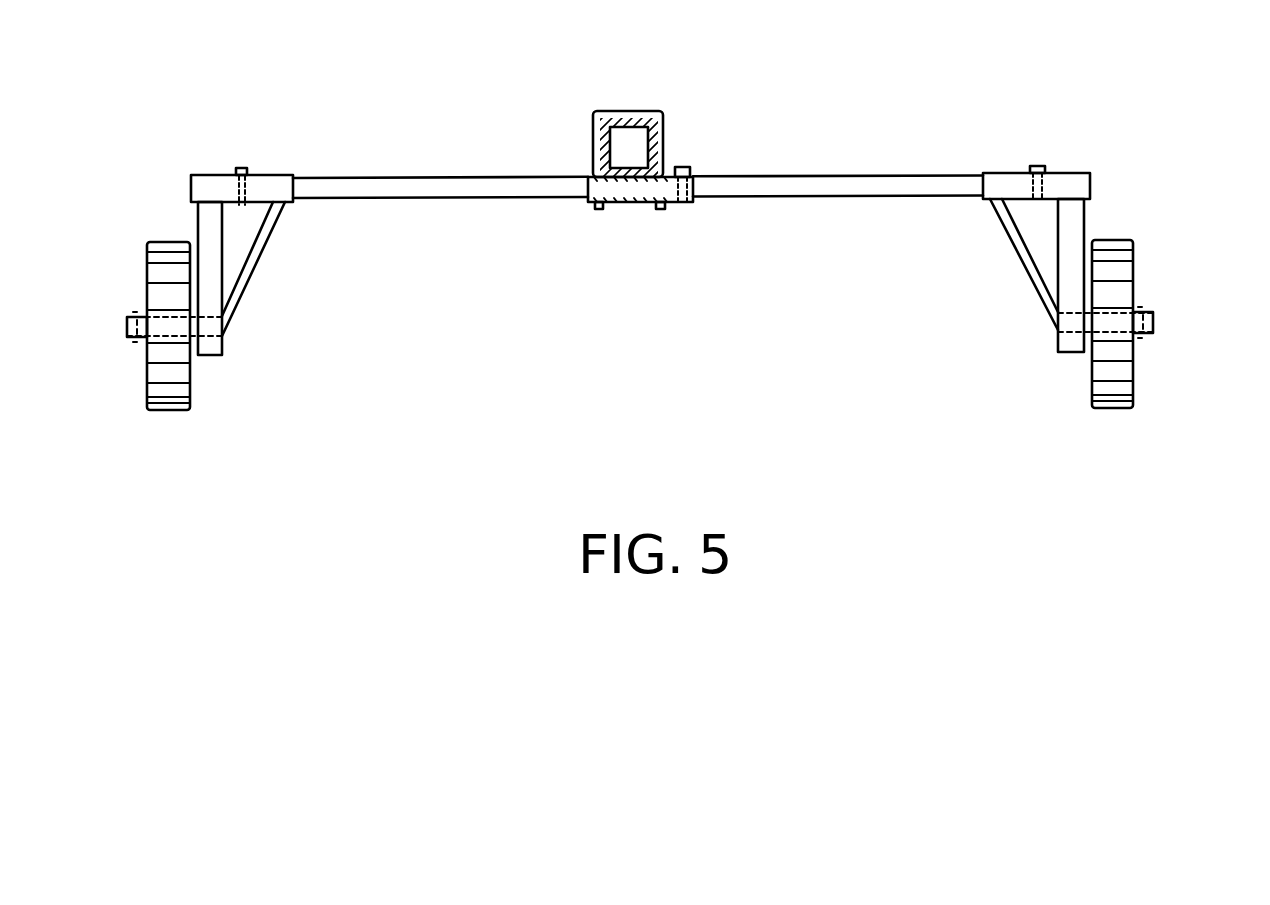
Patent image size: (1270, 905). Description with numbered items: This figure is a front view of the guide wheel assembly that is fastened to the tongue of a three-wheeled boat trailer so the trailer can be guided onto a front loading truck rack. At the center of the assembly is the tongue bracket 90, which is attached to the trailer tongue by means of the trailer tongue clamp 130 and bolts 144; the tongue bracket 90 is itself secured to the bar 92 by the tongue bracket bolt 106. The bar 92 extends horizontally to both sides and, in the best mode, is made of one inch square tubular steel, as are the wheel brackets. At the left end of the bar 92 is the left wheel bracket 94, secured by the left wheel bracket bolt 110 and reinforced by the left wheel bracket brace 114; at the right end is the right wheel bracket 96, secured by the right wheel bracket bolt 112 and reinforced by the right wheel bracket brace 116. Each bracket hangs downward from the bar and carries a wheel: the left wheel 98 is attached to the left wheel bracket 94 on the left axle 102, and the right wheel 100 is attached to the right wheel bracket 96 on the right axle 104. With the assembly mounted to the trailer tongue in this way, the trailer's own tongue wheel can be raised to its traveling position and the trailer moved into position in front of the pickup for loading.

The tongue bracket 90 is at (623, 188).
The bar 92 is at (842, 190).
The left wheel bracket 94 is at (213, 175).
The right wheel bracket 96 is at (1073, 173).
The left wheel 98 is at (160, 242).
The right wheel 100 is at (1110, 240).
The left axle 102 is at (127, 318).
The right axle 104 is at (1153, 318).
The tongue bracket bolt 106 is at (683, 167).
The left wheel bracket bolt 110 is at (243, 168).
The right wheel bracket bolt 112 is at (1037, 166).
The left wheel bracket brace 114 is at (259, 257).
The right wheel bracket brace 116 is at (1020, 256).
The tongue clamp 130 is at (615, 110).
The bolts 144 is at (660, 210).